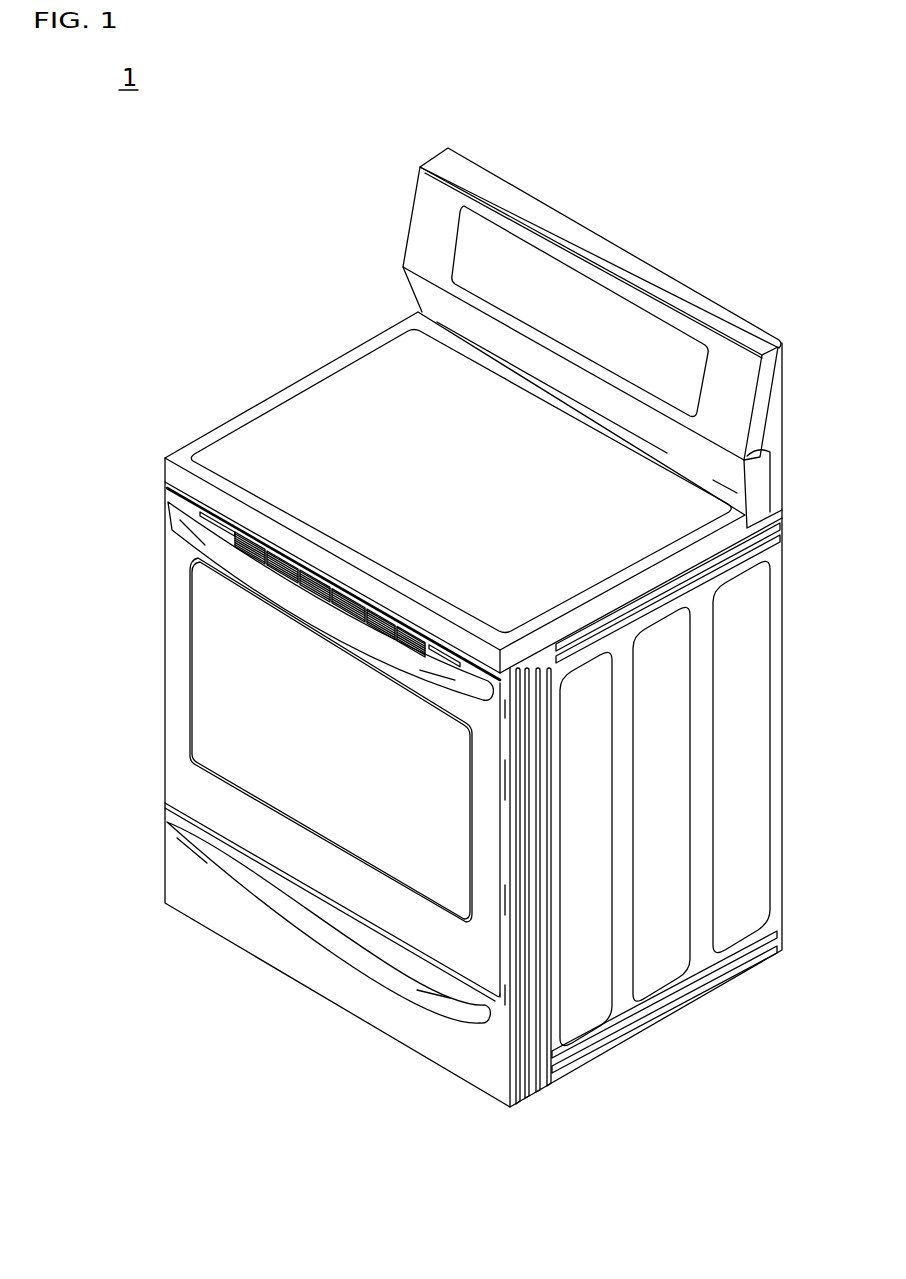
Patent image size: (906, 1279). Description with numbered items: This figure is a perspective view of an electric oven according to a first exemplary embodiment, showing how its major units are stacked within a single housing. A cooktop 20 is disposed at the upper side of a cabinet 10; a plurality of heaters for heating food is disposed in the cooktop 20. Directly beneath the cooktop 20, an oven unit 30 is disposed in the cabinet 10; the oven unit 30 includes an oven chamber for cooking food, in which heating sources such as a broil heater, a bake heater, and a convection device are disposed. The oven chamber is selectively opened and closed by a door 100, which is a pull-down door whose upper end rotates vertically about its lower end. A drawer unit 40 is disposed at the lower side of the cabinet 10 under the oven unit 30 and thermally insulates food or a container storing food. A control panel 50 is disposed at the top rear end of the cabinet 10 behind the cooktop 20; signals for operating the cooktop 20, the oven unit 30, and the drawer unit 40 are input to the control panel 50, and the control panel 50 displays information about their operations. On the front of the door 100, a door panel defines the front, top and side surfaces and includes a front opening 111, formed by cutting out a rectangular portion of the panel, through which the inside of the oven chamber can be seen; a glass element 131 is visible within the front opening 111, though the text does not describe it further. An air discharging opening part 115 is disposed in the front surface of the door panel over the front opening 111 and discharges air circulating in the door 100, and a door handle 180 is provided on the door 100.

The cabinet 10 is at (273, 222).
The cooktop 20 is at (227, 407).
The oven unit 30 is at (122, 595).
The drawer unit 40 is at (152, 855).
The control panel 50 is at (630, 232).
The door 100 is at (287, 779).
The front opening 111 is at (190, 693).
The air discharging opening part 115 is at (256, 540).
The door glass window 131 is at (217, 733).
The door handle 180 is at (195, 543).